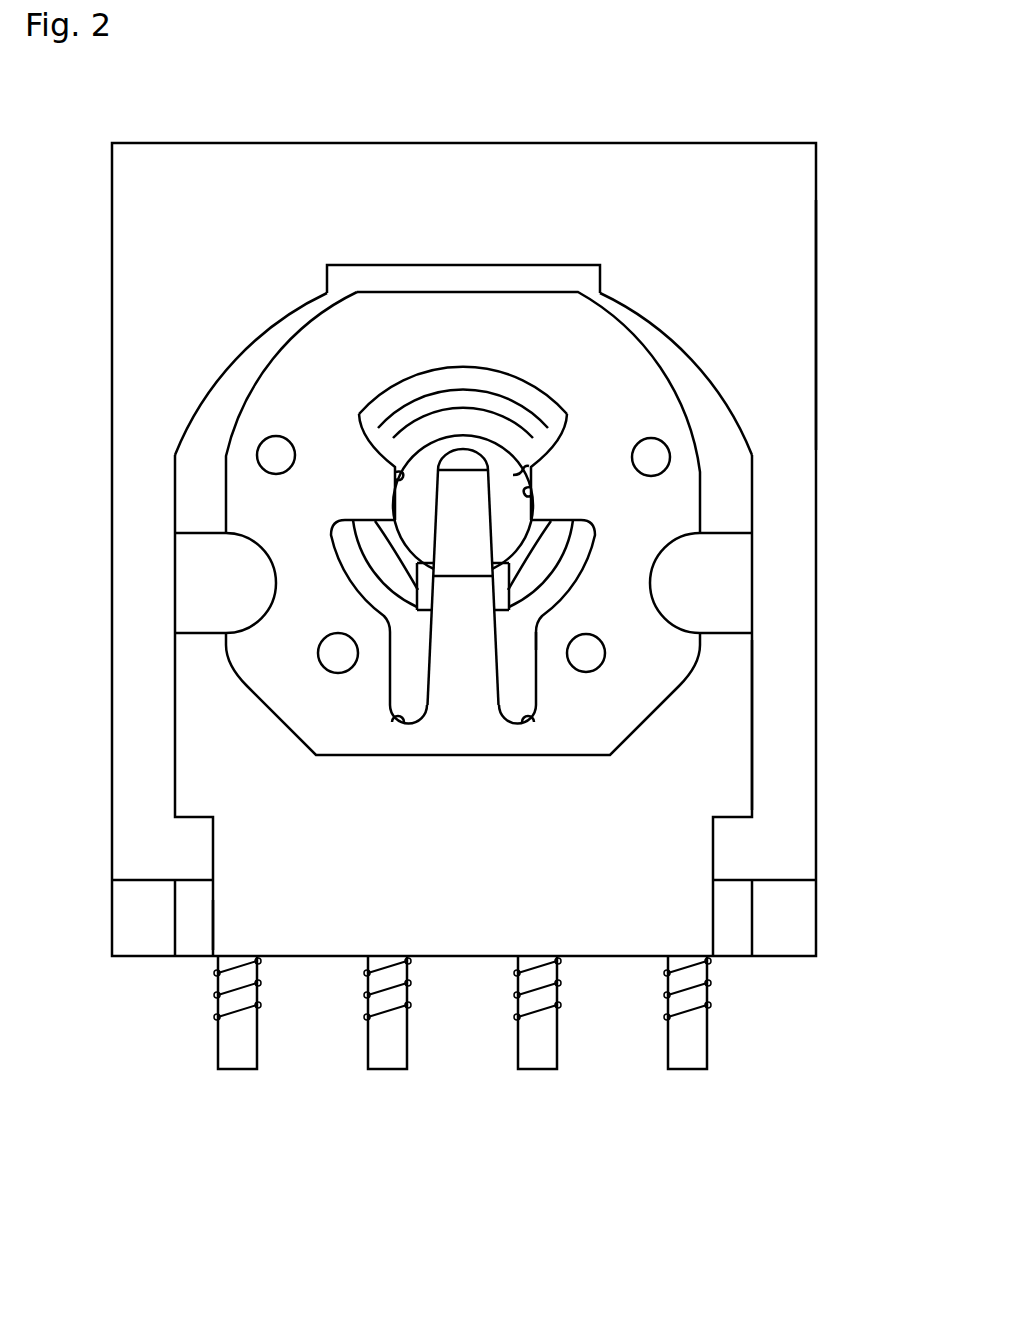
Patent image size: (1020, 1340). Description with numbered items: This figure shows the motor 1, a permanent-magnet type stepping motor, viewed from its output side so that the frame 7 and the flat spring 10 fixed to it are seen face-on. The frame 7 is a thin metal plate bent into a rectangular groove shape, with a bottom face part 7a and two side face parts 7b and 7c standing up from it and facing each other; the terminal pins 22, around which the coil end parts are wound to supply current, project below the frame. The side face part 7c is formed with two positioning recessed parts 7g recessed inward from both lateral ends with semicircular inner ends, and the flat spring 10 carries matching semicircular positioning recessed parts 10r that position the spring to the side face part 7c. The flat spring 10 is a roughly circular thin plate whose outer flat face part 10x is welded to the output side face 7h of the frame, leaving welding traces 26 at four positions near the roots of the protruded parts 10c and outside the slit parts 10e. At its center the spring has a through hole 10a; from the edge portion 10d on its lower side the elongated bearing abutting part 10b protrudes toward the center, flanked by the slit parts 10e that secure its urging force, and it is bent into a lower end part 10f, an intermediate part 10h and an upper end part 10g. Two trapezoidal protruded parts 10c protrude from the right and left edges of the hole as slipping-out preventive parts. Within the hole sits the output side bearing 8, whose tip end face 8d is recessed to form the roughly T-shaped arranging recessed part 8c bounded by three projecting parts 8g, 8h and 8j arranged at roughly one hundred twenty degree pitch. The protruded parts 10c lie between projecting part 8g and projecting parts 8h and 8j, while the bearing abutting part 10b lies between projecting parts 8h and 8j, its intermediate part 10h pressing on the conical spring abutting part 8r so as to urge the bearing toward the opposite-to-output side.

The motor 1 is at (705, 70).
The frame 7 is at (371, 142).
The bottom face part 7a is at (753, 912).
The side face part 7b is at (818, 318).
The side face part 7c is at (753, 678).
The positioning recessed part 7g is at (205, 535).
The output side face 7h is at (326, 842).
The output side bearing 8 is at (463, 392).
The arranging recessed part 8c is at (429, 465).
The tip end face 8d is at (508, 430).
The projecting part 8g is at (463, 423).
The projecting part 8h is at (370, 573).
The projecting part 8j is at (548, 580).
The spring abutting part 8r is at (517, 470).
The flat spring 10 is at (621, 325).
The through hole 10a is at (378, 405).
The bearing abutting part 10b is at (433, 507).
The protruded part 10c is at (397, 476).
The edge portion 10d is at (395, 716).
The slit part 10e is at (423, 690).
The lower end part 10f is at (522, 632).
The upper end part 10g is at (486, 440).
The intermediate part 10h is at (463, 555).
The positioning recessed part 10r is at (250, 617).
The flat face part 10x is at (315, 377).
The terminal pin 22 is at (237, 1069).
The welding trace 26 is at (278, 437).